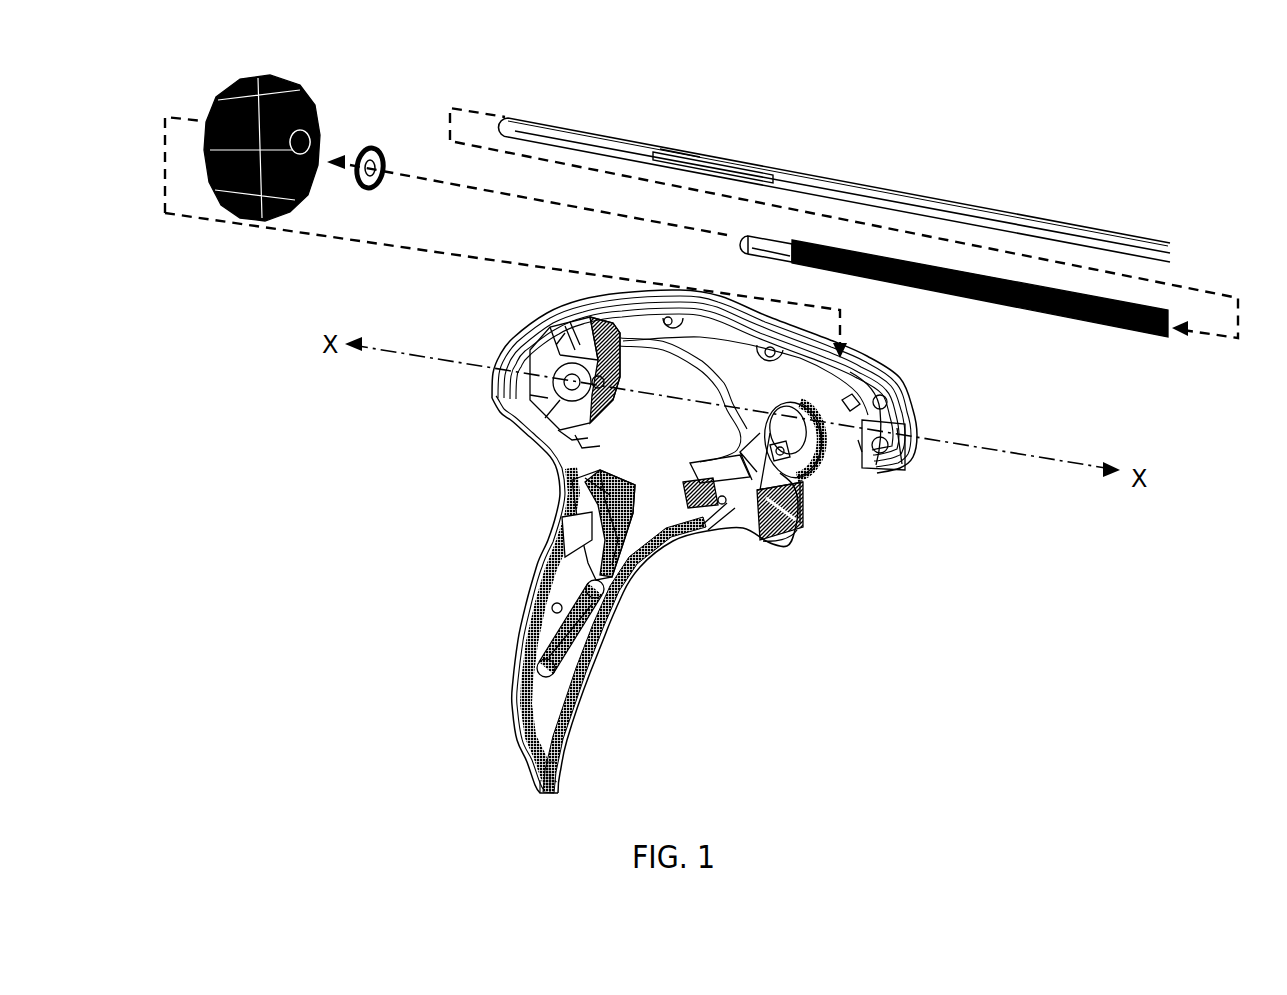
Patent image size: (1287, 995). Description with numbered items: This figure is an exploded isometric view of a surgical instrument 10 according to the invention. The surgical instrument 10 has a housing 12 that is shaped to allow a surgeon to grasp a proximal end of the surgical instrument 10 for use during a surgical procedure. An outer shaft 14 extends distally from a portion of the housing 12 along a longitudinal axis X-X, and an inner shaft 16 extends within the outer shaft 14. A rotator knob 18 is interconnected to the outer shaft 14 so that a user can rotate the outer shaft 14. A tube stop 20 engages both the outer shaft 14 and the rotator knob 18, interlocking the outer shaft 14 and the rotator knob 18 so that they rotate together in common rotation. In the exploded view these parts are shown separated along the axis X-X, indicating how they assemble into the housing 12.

The surgical instrument 10 is at (764, 94).
The housing 12 is at (518, 340).
The outer shaft 14 is at (1037, 307).
The inner shaft 16 is at (858, 178).
The rotator knob 18 is at (254, 75).
The tube stop 20 is at (375, 150).